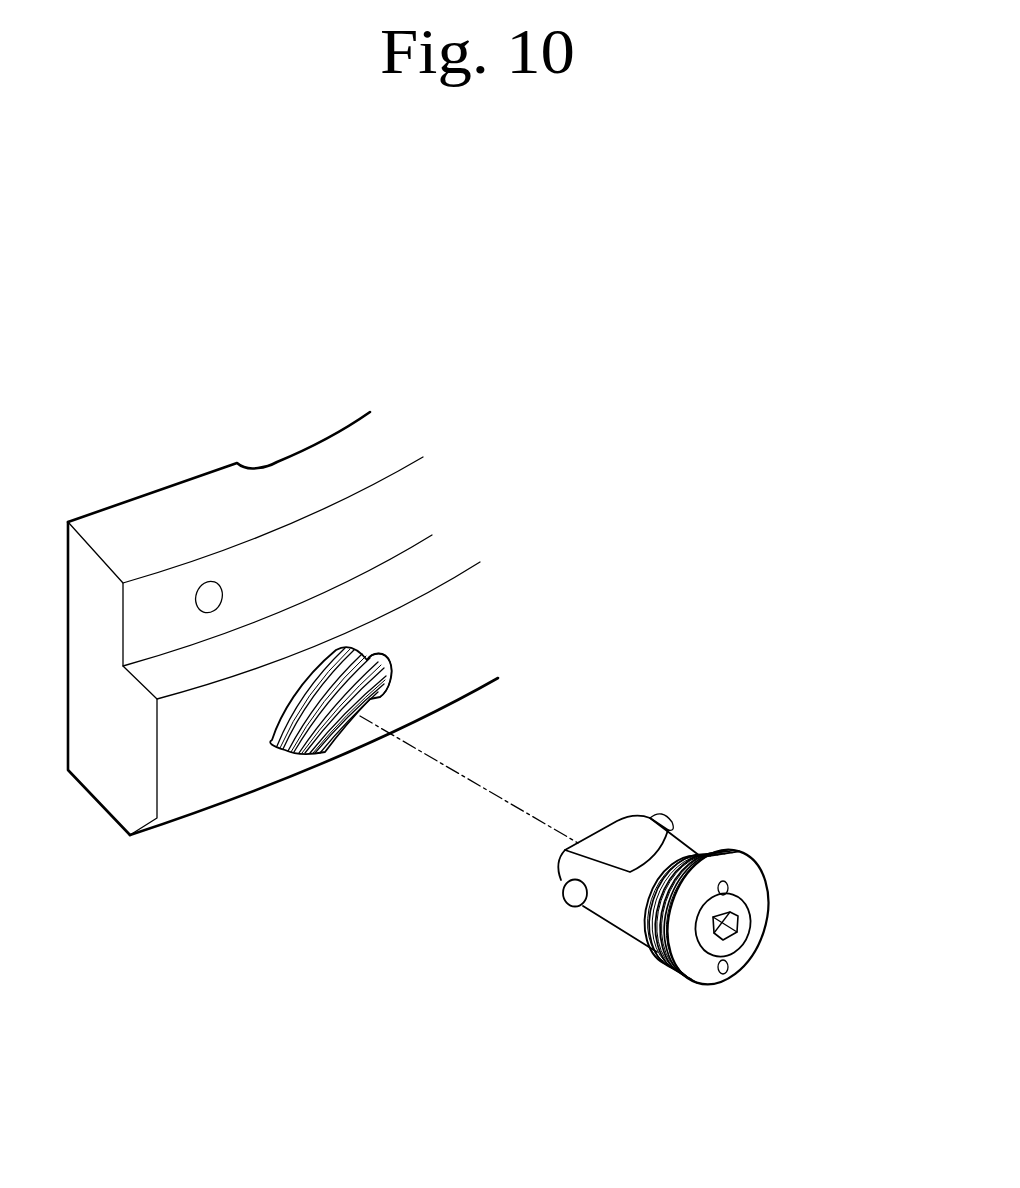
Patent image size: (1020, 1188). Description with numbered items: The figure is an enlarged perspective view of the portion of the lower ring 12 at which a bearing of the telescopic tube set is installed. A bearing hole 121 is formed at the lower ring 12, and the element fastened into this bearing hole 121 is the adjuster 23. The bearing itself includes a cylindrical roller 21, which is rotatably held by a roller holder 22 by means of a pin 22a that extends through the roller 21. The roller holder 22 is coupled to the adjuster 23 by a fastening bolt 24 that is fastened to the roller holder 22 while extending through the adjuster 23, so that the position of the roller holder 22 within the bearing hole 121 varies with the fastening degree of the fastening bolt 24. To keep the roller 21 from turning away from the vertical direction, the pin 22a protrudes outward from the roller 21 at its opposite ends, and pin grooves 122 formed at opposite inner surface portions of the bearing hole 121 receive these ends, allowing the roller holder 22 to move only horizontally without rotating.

The lower ring 12 is at (272, 503).
The bearing hole 121 is at (340, 738).
The pin grooves 122 is at (388, 672).
The cylindrical roller 21 is at (622, 837).
The roller holder 22 is at (735, 914).
The pin 22a is at (577, 897).
The adjuster 23 is at (665, 962).
The fastening bolt 24 is at (745, 925).